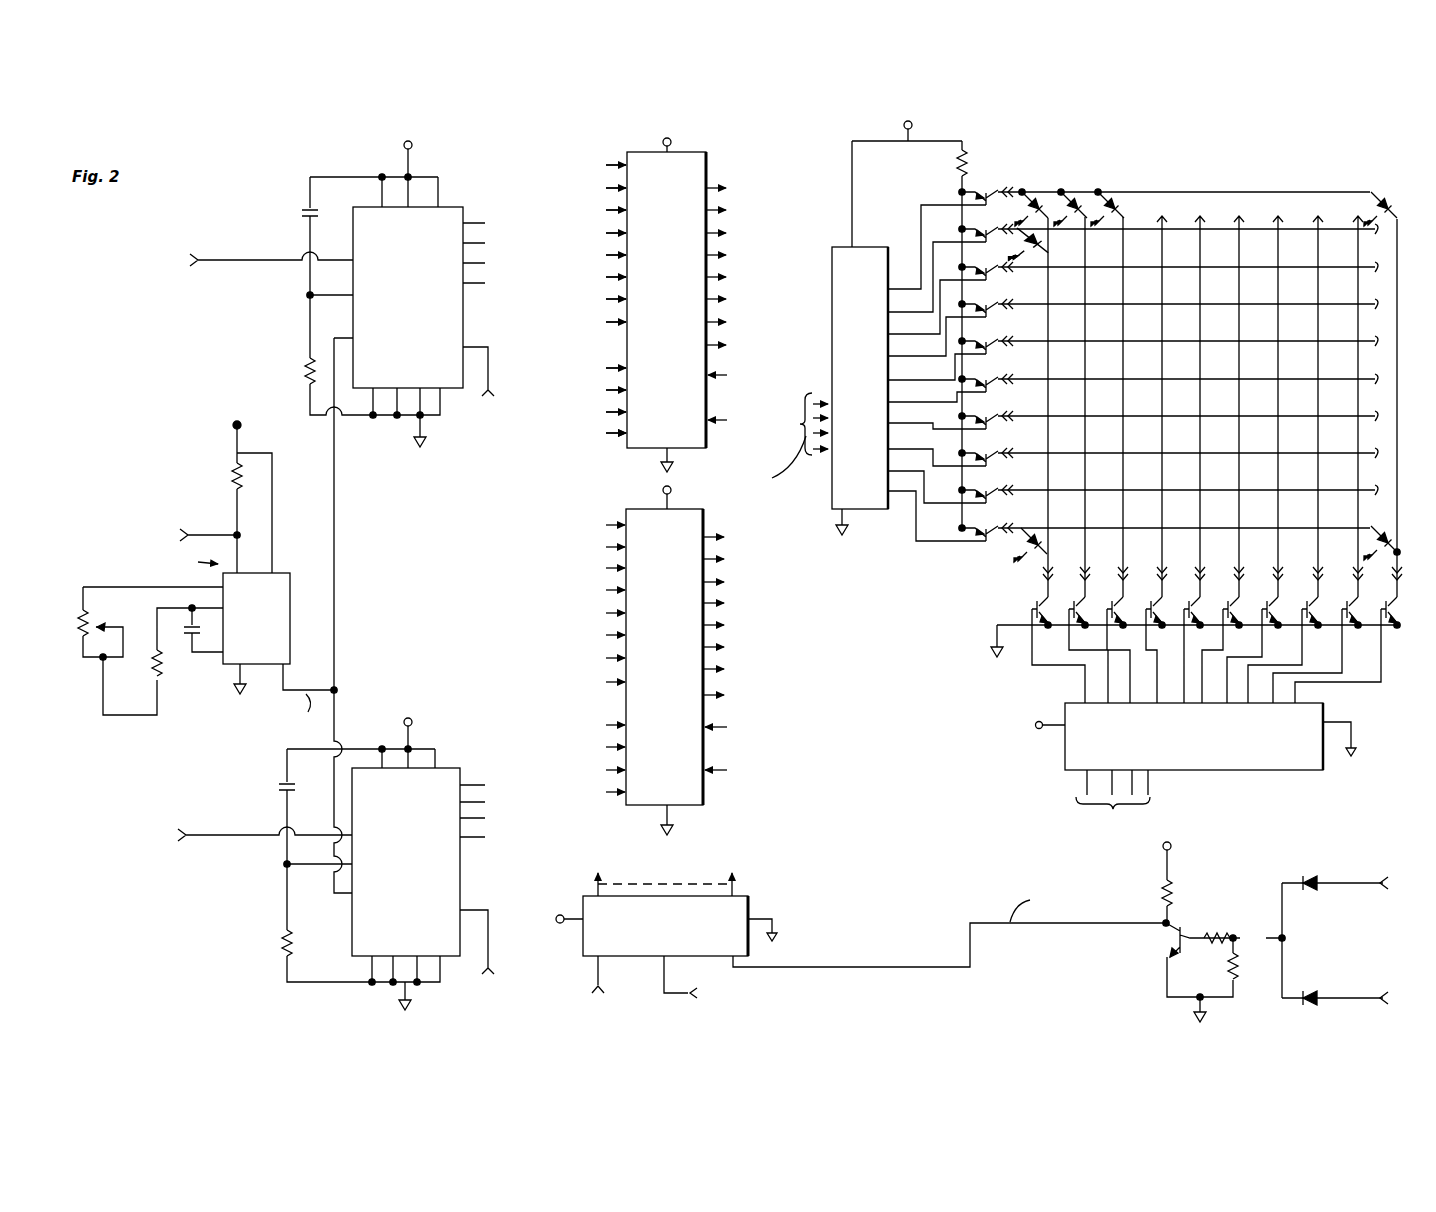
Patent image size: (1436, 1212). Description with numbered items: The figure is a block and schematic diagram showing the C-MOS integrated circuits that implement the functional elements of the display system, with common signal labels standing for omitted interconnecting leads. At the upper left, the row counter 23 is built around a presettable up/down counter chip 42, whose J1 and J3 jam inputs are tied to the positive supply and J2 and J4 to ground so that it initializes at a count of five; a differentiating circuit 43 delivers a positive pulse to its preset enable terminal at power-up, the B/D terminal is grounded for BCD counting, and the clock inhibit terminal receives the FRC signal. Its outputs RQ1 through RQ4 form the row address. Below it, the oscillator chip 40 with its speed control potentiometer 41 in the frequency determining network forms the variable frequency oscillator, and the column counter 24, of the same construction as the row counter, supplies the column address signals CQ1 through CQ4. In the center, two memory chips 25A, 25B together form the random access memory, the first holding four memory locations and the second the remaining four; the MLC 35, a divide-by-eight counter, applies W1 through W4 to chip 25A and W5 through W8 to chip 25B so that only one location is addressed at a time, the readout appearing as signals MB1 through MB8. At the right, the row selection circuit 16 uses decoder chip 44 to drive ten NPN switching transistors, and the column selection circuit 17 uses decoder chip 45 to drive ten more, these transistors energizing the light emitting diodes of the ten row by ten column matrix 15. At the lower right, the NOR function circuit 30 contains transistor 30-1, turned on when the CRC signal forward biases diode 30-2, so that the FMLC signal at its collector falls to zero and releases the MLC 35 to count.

The row counter 23 is at (338, 162).
The IC chip 42 is at (451, 207).
The differentiating circuit 43 is at (292, 330).
The IC chip 40 is at (290, 587).
The speed control potentiometer 41 is at (82, 634).
The column counter 24 is at (448, 757).
The IC chip 25A is at (706, 152).
The IC chip 25B is at (703, 512).
The MLC 35 is at (750, 896).
The NOR function circuit 30 is at (1216, 913).
The transistor 30-1 is at (1160, 945).
The diode 30-2 is at (1302, 1004).
The IC chip 44 is at (836, 222).
The row selection circuit 16 is at (896, 188).
The matrix 15 is at (1352, 162).
The column selection circuit 17 is at (1022, 683).
The IC chip 45 is at (1065, 752).